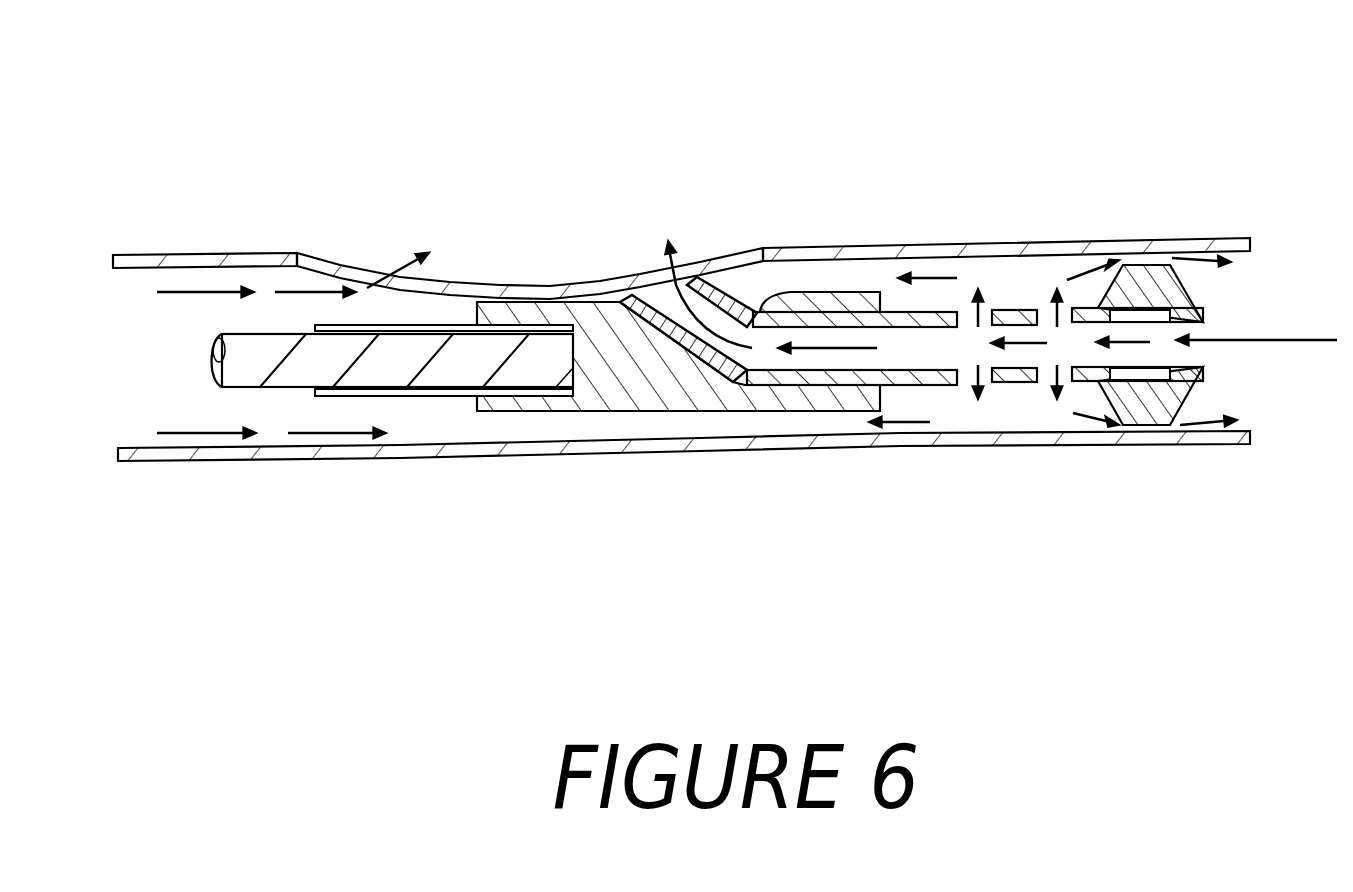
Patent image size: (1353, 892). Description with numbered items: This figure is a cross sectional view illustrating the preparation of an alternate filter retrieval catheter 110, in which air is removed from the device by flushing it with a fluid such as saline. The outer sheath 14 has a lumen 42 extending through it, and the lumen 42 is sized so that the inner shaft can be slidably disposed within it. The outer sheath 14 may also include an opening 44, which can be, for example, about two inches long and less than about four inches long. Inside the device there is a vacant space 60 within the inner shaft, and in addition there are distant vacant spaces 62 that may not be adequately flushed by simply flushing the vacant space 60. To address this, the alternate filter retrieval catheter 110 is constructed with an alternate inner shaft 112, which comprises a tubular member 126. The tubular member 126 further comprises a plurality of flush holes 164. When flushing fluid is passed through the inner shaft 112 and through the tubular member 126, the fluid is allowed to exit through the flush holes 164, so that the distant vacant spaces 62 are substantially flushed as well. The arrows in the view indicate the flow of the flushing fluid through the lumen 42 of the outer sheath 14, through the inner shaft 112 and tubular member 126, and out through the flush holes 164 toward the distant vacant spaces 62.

The alternate filter retrieval catheter 110 is at (331, 204).
The outer sheath 14 is at (453, 450).
The opening 44 is at (543, 265).
The lumen 42 is at (150, 427).
The alternate inner shaft 112 is at (647, 413).
The vacant space 60 is at (270, 415).
The tubular member 126 is at (845, 385).
The flush holes 164 is at (963, 385).
The distant vacant spaces 62 is at (1043, 268).